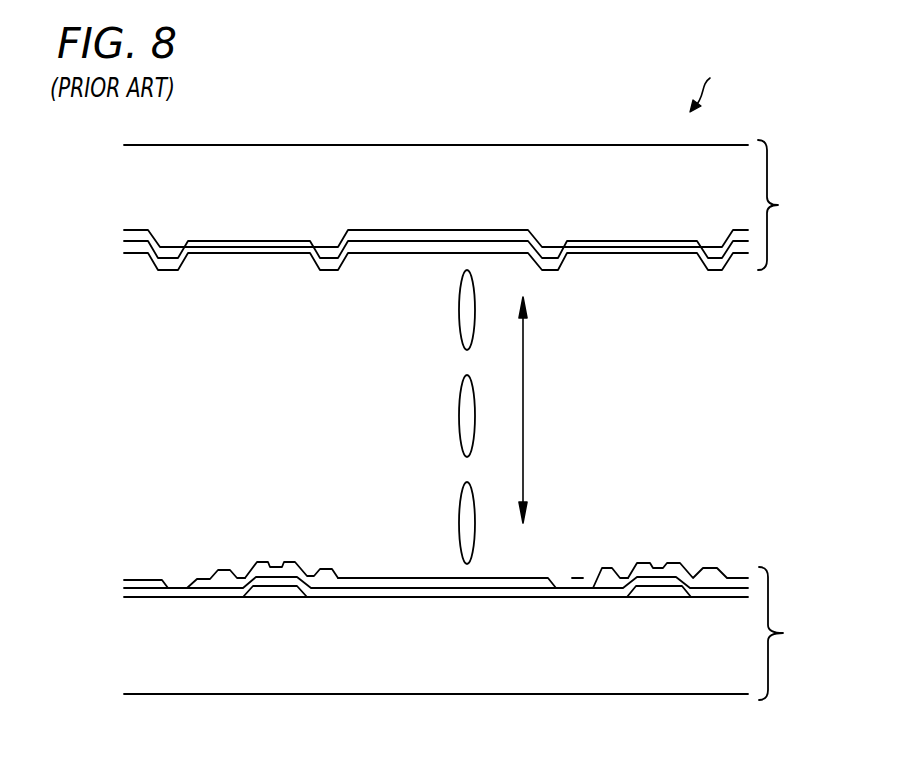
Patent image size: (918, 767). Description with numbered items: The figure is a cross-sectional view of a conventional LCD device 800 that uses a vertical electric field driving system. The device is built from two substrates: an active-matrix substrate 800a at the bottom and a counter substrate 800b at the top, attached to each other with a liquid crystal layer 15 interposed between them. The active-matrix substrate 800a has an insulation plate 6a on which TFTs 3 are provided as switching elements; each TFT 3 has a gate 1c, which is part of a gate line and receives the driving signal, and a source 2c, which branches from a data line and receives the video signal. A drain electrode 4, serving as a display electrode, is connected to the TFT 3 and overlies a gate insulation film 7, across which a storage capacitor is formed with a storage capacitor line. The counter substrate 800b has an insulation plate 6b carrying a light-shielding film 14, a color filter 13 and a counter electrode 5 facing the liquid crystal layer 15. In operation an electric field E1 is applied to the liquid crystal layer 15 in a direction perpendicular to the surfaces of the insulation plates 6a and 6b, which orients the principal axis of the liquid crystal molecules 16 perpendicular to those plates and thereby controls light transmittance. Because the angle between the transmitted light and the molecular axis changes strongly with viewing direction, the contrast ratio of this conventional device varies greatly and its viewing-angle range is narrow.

The conventional LCD device 800 is at (715, 78).
The active-matrix substrate 800a is at (807, 633).
The counter substrate 800b is at (800, 205).
The insulation plate 6a is at (255, 652).
The insulation plate 6b is at (167, 198).
The gate 1c is at (268, 592).
The source 2c is at (198, 581).
The TFT 3 is at (277, 568).
The drain electrode 4 is at (455, 583).
The counter electrode 5 is at (417, 247).
The gate insulation film 7 is at (124, 588).
The color filter 13 is at (503, 232).
The light-shielding film 14 is at (235, 240).
The liquid crystal layer 15 is at (210, 433).
The liquid crystal molecules 16 is at (463, 310).
The electric field E1 is at (541, 410).